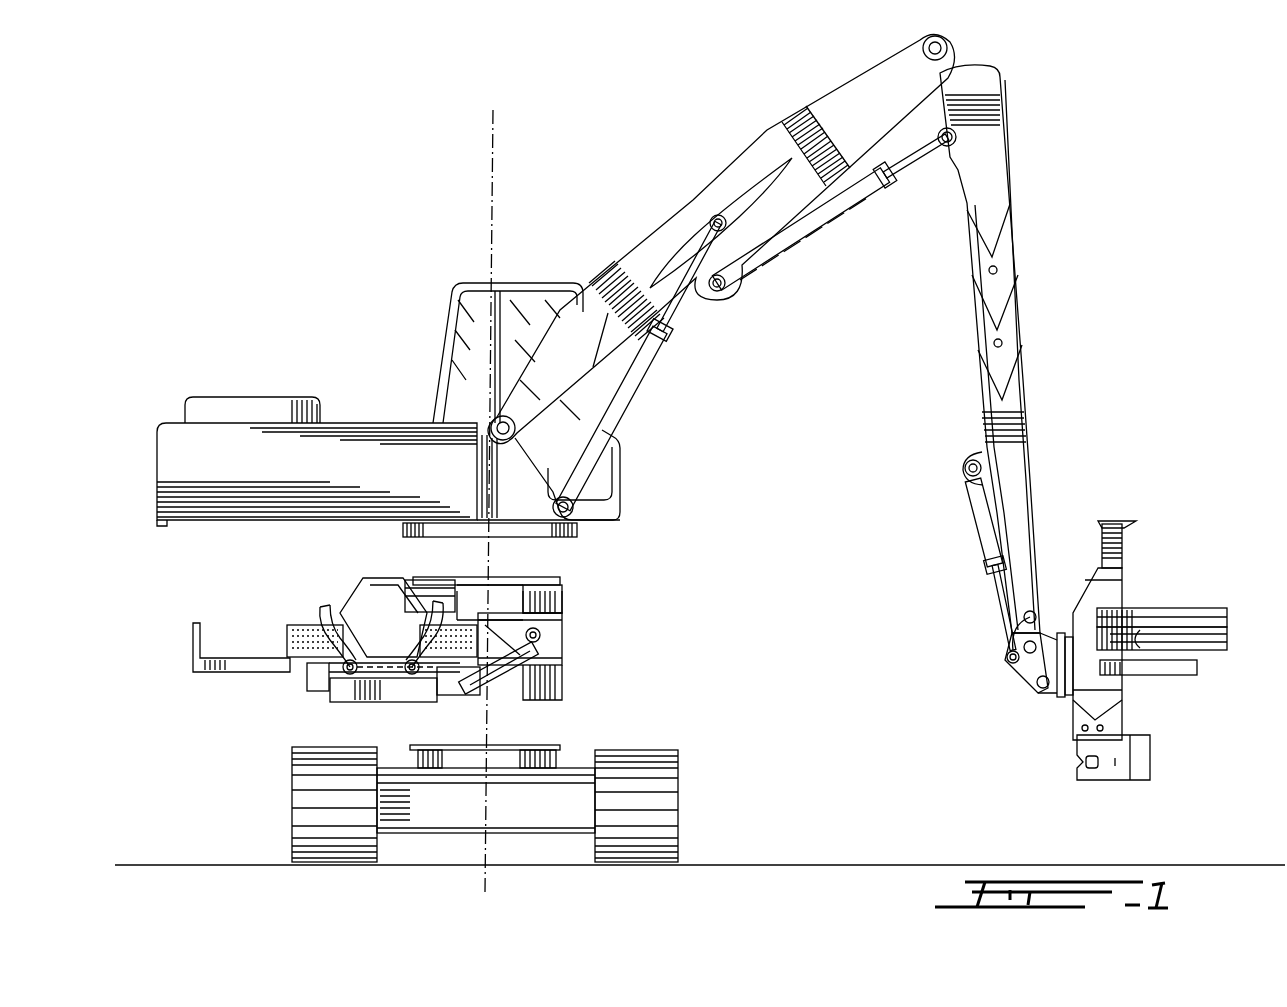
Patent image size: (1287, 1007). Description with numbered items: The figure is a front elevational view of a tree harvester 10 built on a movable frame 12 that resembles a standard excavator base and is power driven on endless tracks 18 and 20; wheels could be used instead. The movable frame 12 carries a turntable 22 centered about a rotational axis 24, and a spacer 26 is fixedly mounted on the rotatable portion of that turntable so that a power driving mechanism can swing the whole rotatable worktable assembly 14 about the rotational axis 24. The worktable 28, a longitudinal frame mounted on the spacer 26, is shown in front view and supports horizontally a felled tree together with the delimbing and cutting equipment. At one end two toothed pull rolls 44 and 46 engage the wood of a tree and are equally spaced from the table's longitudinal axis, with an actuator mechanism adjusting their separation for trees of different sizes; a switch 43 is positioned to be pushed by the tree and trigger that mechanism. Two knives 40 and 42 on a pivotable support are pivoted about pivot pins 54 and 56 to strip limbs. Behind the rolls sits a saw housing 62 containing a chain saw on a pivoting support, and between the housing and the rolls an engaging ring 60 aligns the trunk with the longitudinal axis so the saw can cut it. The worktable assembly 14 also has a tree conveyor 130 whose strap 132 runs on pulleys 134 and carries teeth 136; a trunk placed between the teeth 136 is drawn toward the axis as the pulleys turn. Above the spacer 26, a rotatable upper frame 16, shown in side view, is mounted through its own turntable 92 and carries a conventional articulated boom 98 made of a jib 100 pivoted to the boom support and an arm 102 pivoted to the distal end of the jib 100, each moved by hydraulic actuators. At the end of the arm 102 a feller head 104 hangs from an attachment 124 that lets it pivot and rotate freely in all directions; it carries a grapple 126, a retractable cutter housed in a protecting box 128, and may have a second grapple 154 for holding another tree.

The tree harvester 10 is at (322, 208).
The movable frame 12 is at (710, 798).
The rotatable worktable assembly 14 is at (270, 702).
The rotatable upper frame 16 is at (432, 348).
The endless track 18 is at (283, 805).
The endless track 20 is at (661, 745).
The turntable 22 is at (565, 750).
The rotational axis 24 is at (494, 177).
The spacer 26 is at (560, 603).
The worktable 28 is at (340, 690).
The knife 40 is at (318, 605).
The knife 42 is at (416, 672).
The switch 43 is at (372, 663).
The pull roll 44 is at (295, 625).
The pull roll 46 is at (482, 740).
The pivot pin 54 is at (345, 665).
The pivot pin 56 is at (396, 672).
The engaging ring 60 is at (360, 577).
The saw housing 62 is at (425, 583).
The turntable 92 is at (577, 532).
The articulated boom 98 is at (689, 172).
The jib 100 is at (806, 136).
The arm 102 is at (1000, 120).
The feller head 104 is at (1081, 540).
The attachment 124 is at (1012, 690).
The grapple 126 is at (1171, 600).
The protecting box 128 is at (1140, 760).
The tree conveyor 130 is at (589, 646).
The strap 132 is at (508, 690).
The pulley 134 is at (541, 636).
The teeth 136 is at (520, 605).
The second grapple 154 is at (1185, 672).